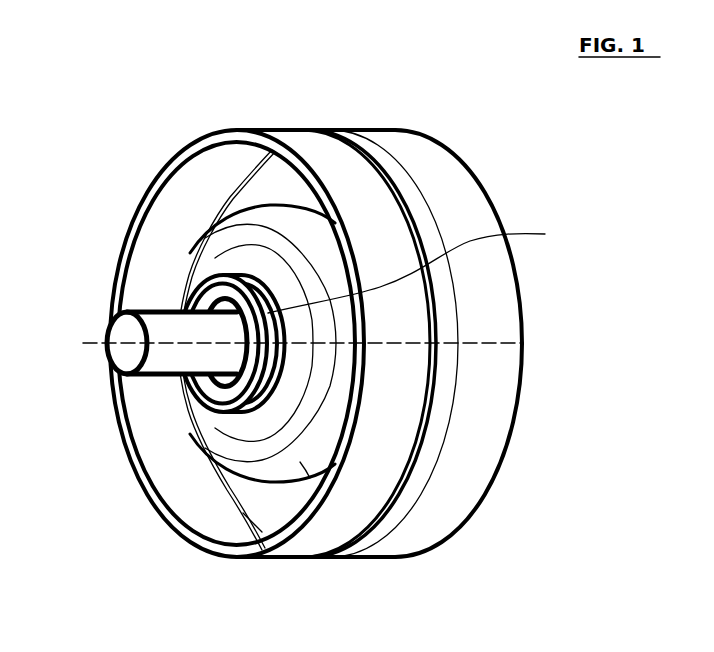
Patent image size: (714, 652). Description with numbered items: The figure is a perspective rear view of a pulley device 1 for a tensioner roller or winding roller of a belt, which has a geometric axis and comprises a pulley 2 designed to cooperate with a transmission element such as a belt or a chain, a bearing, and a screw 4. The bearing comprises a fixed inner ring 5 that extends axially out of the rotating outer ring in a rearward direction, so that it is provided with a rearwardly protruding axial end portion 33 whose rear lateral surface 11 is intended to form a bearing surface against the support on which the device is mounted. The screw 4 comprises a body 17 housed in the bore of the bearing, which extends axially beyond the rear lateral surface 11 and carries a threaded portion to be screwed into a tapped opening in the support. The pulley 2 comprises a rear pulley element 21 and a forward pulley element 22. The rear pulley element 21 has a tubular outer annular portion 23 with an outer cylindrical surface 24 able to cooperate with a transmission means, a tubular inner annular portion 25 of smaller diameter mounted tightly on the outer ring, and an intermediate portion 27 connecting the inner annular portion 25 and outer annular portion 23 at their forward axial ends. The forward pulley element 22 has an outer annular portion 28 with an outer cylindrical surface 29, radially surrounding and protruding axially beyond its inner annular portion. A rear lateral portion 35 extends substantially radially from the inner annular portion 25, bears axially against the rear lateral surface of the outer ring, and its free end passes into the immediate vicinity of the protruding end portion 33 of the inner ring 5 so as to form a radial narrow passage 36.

The pulley device 1 is at (123, 170).
The pulley 2 is at (378, 58).
The screw 4 is at (141, 309).
The fixed inner ring 5 is at (265, 314).
The rear lateral surface 11 is at (203, 391).
The body 17 is at (117, 333).
The rear pulley element 21 is at (288, 130).
The forward pulley element 22 is at (371, 130).
The outer annular portion 23 is at (187, 148).
The outer cylindrical surface 24 is at (270, 127).
The inner annular portion 25 is at (307, 467).
The intermediate portion 27 is at (258, 516).
The outer annular portion 28 is at (495, 450).
The outer cylindrical surface 29 is at (453, 520).
The rearwardly protruding axial end portion 33 is at (240, 262).
The rear lateral portion 35 is at (220, 427).
The radial narrow passage 36 is at (262, 415).